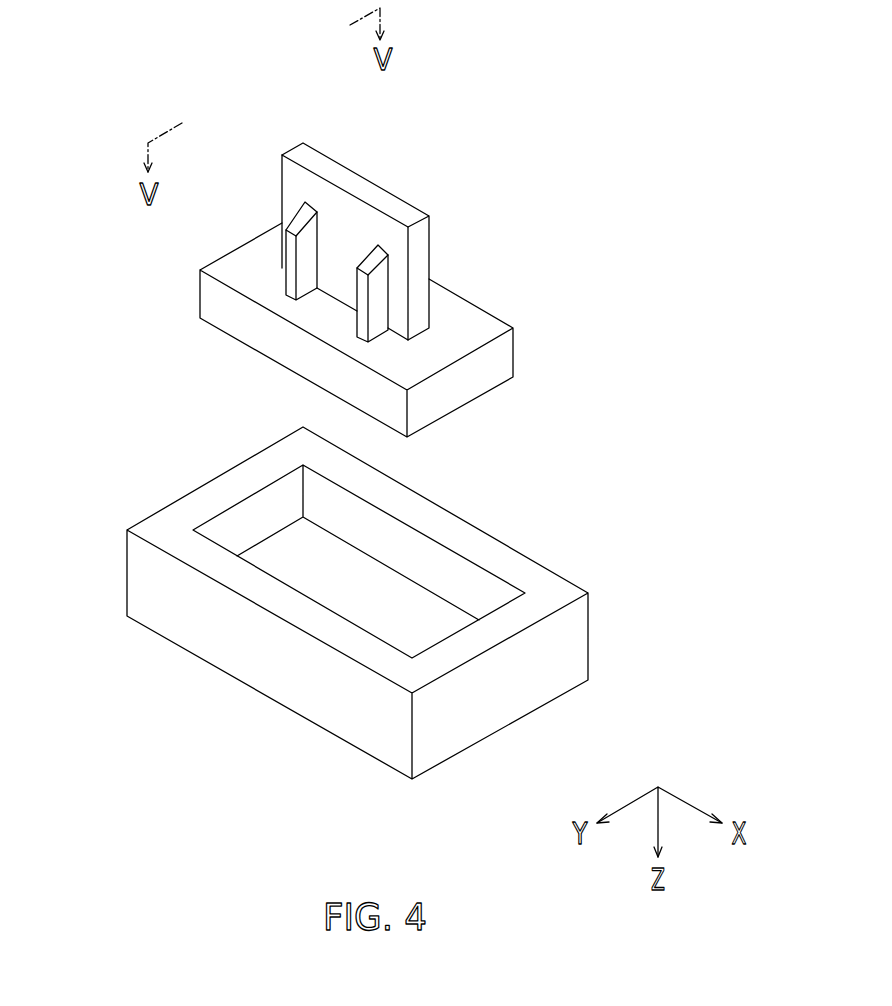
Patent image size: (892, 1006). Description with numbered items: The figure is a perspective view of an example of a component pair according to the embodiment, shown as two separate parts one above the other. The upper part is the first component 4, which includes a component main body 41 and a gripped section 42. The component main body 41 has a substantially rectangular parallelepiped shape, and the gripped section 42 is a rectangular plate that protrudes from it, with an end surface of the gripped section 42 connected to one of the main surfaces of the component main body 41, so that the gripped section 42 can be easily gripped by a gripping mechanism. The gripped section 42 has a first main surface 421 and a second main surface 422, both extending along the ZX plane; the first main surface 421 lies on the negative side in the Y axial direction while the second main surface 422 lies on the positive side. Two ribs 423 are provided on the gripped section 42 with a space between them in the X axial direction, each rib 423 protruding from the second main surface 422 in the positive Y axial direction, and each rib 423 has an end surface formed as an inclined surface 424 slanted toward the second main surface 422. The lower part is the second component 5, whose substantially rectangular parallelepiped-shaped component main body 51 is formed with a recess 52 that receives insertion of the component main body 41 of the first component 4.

The first component 4 is at (533, 265).
The component main body 41 is at (472, 383).
The gripped section 42 is at (422, 192).
The first main surface 421 is at (376, 186).
The second main surface 422 is at (343, 202).
The rib 423 is at (282, 288).
The inclined surface 424 is at (298, 217).
The second component 5 is at (587, 557).
The component main body 51 is at (473, 720).
The recess 52 is at (445, 557).